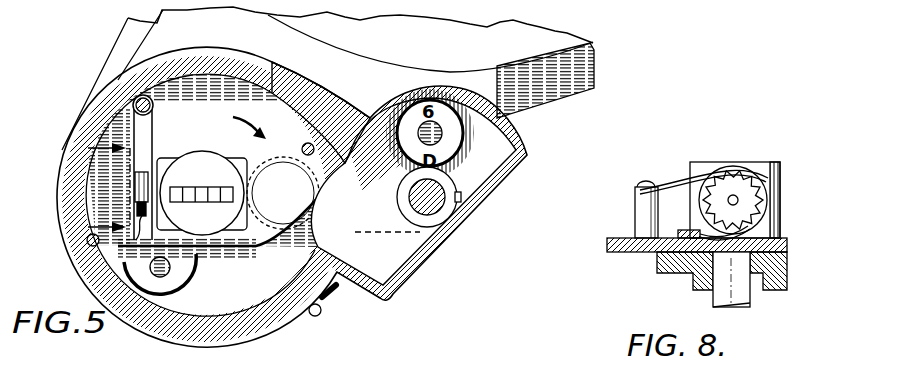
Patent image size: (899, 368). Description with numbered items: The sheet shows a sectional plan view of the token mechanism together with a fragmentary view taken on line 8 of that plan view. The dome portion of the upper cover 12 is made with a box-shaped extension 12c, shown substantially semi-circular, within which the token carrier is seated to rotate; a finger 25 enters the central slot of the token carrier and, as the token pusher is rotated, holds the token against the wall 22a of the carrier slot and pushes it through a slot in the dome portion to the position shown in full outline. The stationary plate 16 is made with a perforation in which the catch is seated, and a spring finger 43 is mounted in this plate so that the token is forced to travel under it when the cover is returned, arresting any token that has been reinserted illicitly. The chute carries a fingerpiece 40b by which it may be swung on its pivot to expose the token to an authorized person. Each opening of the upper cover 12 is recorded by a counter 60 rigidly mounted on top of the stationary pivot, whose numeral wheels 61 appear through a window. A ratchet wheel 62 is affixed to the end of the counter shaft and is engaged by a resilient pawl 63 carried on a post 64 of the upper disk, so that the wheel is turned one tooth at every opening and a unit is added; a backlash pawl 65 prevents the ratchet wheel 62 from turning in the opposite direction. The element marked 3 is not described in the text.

In FIG. 5, the upper cover 12 is at (568, 43).
In FIG. 5, the post 64 is at (133, 96).
In FIG. 8, the post 64 is at (643, 203).
In FIG. 5, the resilient pawl 63 is at (133, 120).
In FIG. 8, the resilient pawl 63 is at (678, 177).
In FIG. 5, the numeral wheels 61 is at (183, 187).
In FIG. 5, the counter 60 is at (210, 160).
In FIG. 8, the counter 60 is at (763, 173).
In FIG. 5, the ratchet wheel 62 is at (156, 214).
In FIG. 8, the ratchet wheel 62 is at (753, 170).
In FIG. 5, the line 8 is at (109, 187).
In FIG. 5, the gear housing 3 is at (160, 279).
In FIG. 5, the stationary plate 16 is at (283, 228).
In FIG. 5, the wall of the token carrier slot 22a is at (375, 147).
In FIG. 5, the finger 25 is at (477, 180).
In FIG. 5, the box-shaped extension 12c is at (417, 262).
In FIG. 5, the spring finger 43 is at (338, 292).
In FIG. 5, the fingerpiece 40b is at (312, 318).
In FIG. 8, the backlash pawl 65 is at (677, 270).